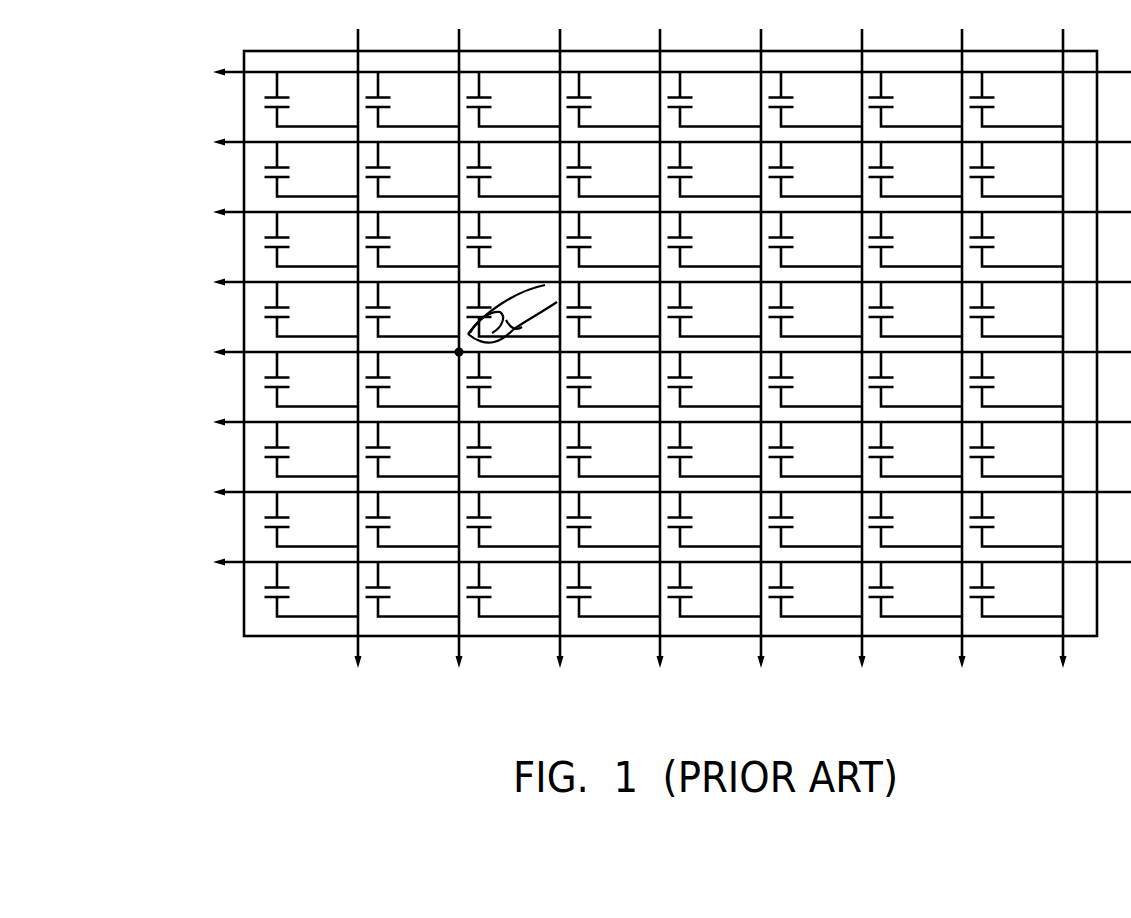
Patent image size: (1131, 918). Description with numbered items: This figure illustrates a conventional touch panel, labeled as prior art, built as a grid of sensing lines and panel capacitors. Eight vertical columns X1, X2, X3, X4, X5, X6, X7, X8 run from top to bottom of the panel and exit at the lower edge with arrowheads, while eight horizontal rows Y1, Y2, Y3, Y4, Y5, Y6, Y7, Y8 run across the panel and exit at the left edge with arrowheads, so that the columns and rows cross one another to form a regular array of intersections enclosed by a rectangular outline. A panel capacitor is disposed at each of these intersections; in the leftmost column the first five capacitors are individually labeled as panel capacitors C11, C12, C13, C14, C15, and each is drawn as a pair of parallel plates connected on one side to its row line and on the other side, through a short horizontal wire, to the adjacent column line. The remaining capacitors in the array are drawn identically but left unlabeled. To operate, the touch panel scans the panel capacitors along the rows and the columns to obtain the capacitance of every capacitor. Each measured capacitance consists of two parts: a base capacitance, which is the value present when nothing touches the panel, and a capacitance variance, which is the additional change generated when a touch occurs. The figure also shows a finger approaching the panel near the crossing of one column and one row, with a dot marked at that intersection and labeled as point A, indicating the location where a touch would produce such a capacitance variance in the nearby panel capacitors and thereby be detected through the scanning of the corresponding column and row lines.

The panel capacitor C11 is at (312, 99).
The panel capacitor C12 is at (312, 169).
The panel capacitor C13 is at (312, 239).
The panel capacitor C14 is at (312, 309).
The panel capacitor C15 is at (312, 379).
The touch point / node A is at (465, 360).
The column X1 is at (358, 369).
The column X2 is at (459, 369).
The column X3 is at (560, 369).
The column X4 is at (660, 369).
The column X5 is at (761, 369).
The column X6 is at (862, 369).
The column X7 is at (962, 369).
The column X8 is at (1063, 369).
The row Y1 is at (646, 72).
The row Y2 is at (646, 142).
The row Y3 is at (646, 212).
The row Y4 is at (646, 282).
The row Y5 is at (646, 352).
The row Y6 is at (646, 422).
The row Y7 is at (646, 492).
The row Y8 is at (646, 562).